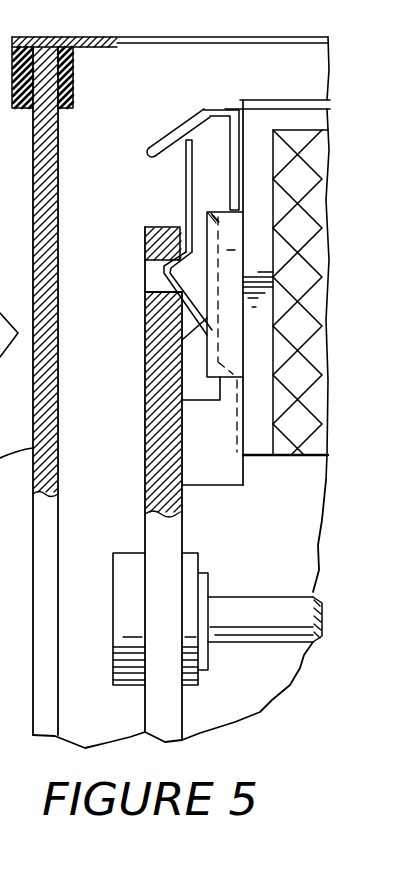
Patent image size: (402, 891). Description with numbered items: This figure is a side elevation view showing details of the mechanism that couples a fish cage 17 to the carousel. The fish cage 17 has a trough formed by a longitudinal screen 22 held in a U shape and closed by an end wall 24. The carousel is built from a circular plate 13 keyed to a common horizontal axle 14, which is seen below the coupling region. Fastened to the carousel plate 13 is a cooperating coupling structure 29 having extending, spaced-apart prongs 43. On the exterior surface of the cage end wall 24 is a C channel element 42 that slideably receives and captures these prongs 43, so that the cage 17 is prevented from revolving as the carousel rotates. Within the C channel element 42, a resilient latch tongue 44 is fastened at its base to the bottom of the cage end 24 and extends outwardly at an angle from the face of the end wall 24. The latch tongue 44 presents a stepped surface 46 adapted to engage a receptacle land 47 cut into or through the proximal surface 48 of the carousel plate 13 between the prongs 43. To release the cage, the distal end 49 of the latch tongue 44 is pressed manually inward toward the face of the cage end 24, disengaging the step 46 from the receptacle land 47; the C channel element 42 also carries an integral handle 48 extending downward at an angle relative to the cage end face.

The circular plate 13 is at (147, 347).
The horizontal axle 14 is at (265, 610).
The fish cage 17 is at (285, 95).
The longitudinal screen 22 is at (307, 183).
The end wall 24 is at (253, 418).
The cooperating coupling structure 29 is at (220, 457).
The 'C' channel element 42 is at (220, 213).
The prong 43 is at (187, 210).
The resilient latch tongue 44 is at (145, 354).
The stepped surface 46 is at (147, 263).
The receptacle land 47 is at (160, 282).
The proximal surface 48 is at (170, 130).
The distal end 49 is at (192, 123).